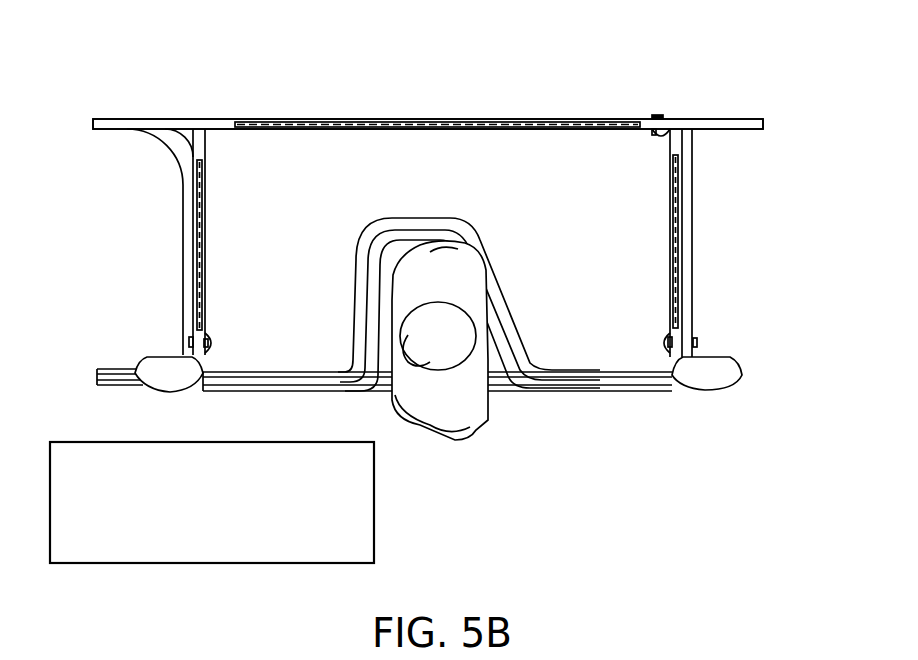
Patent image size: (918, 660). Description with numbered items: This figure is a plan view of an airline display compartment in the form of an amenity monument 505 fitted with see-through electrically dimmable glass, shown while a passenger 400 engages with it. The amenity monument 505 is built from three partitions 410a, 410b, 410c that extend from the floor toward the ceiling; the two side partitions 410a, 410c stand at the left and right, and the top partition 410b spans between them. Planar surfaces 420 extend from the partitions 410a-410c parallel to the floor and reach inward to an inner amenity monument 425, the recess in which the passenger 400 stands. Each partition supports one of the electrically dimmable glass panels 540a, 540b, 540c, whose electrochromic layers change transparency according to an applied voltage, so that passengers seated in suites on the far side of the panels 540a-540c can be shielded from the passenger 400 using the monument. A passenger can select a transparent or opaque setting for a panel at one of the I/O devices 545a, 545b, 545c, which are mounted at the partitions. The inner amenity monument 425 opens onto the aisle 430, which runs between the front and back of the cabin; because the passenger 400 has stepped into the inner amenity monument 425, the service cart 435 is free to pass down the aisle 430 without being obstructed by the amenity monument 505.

The amenity monument 505 is at (636, 81).
The partition 410a is at (192, 228).
The partition 410b is at (345, 119).
The partition 410c is at (683, 217).
The electrically dimmable glass panel 540a is at (198, 160).
The electrically dimmable glass panel 540b is at (432, 119).
The electrically dimmable glass panel 540c is at (678, 268).
The inner amenity monument 425 is at (410, 262).
The passenger 400 is at (462, 280).
The planar surface 420 is at (291, 248).
The aisle 430 is at (524, 523).
The service cart 435 is at (223, 510).
The I/O device 545a is at (207, 343).
The I/O device 545b is at (655, 117).
The I/O device 545c is at (668, 340).